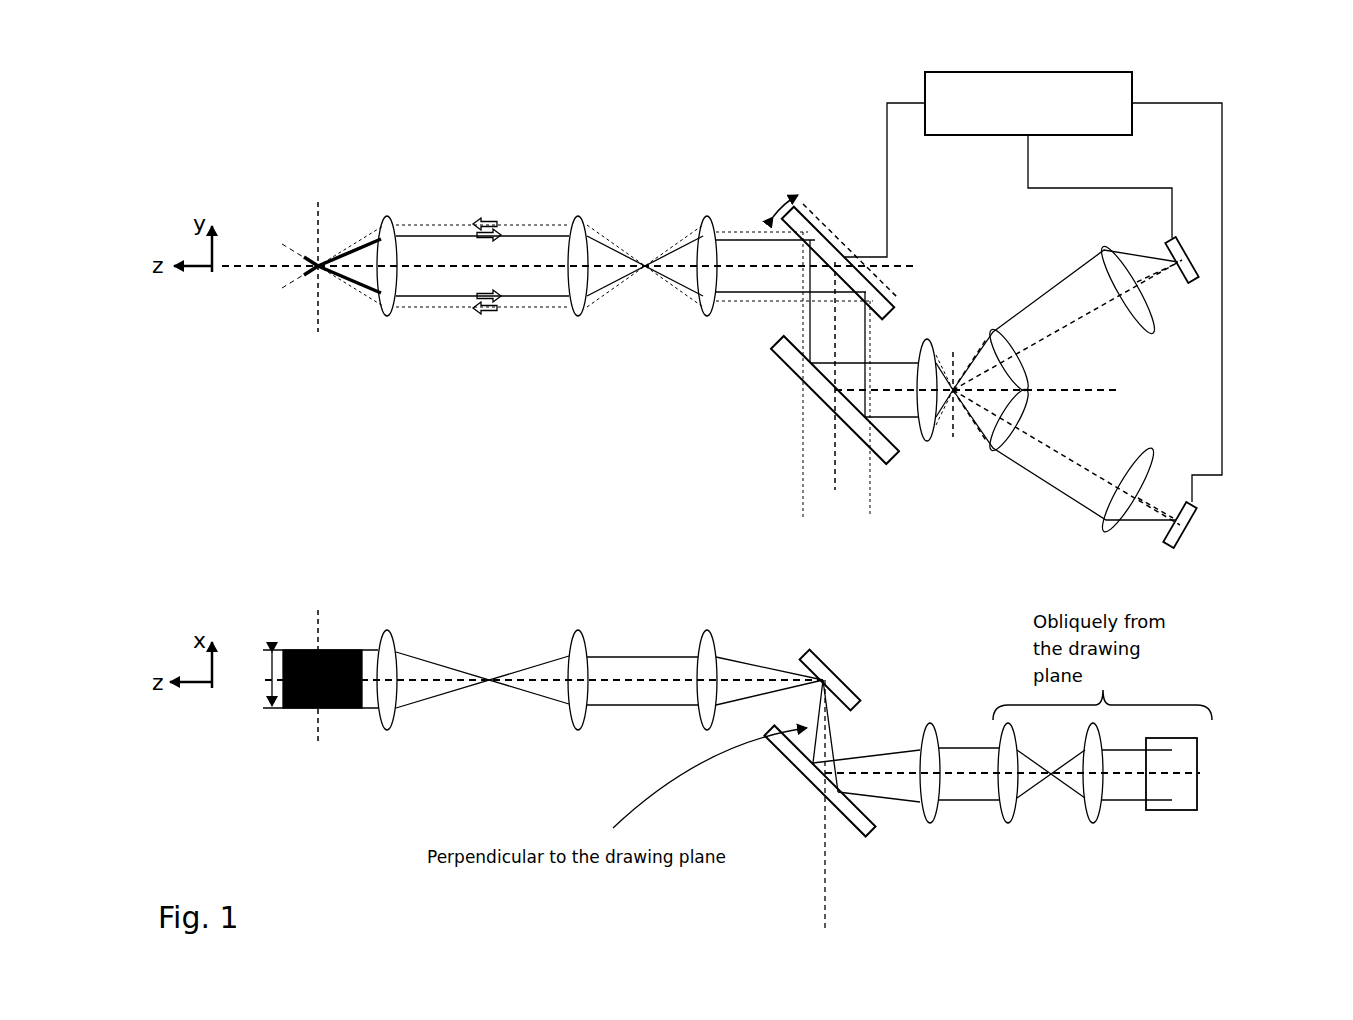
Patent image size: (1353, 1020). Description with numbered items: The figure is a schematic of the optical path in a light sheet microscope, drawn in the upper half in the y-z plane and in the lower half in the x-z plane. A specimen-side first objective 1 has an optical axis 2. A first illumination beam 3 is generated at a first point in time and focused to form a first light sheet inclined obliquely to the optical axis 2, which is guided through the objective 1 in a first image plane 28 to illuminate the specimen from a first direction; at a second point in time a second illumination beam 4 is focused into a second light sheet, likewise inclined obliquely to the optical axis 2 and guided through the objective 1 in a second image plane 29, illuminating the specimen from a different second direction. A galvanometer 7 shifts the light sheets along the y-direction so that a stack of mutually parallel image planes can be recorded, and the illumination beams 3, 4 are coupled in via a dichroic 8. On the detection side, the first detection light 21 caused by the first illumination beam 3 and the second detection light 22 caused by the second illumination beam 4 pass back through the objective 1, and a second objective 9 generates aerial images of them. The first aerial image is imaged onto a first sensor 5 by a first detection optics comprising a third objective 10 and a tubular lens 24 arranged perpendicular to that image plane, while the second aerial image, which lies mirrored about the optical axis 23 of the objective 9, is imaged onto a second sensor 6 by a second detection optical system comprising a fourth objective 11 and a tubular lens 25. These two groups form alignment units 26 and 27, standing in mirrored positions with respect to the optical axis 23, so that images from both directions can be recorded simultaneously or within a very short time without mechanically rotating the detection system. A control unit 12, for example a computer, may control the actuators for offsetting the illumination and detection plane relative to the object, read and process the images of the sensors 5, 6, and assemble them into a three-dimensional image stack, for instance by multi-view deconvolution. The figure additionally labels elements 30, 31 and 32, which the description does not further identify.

The first objective 1 is at (388, 318).
The optical axis 2 is at (262, 680).
The first illumination beam 3 is at (526, 226).
The second illumination beam 4 is at (512, 308).
The first sensor 5 is at (1192, 526).
The second sensor 6 is at (1196, 266).
The galvanometer 7 is at (822, 235).
The dichroic 8 is at (786, 366).
The second objective 9 is at (932, 340).
The third objective 10 is at (990, 450).
The fourth objective 11 is at (995, 330).
The control unit 12 is at (1133, 85).
The first detection light 21 is at (464, 297).
The second detection light 22 is at (462, 236).
The optical axis 23 is at (1121, 390).
The tubular lens 24 is at (1100, 534).
The tubular lens 25 is at (1100, 246).
The alignment unit 26 is at (1230, 559).
The alignment unit 27 is at (1252, 204).
The first image plane 28 is at (336, 256).
The second image plane 29 is at (336, 278).
The focal plane 30 is at (318, 212).
The lens 31 is at (578, 318).
The lens 32 is at (708, 318).